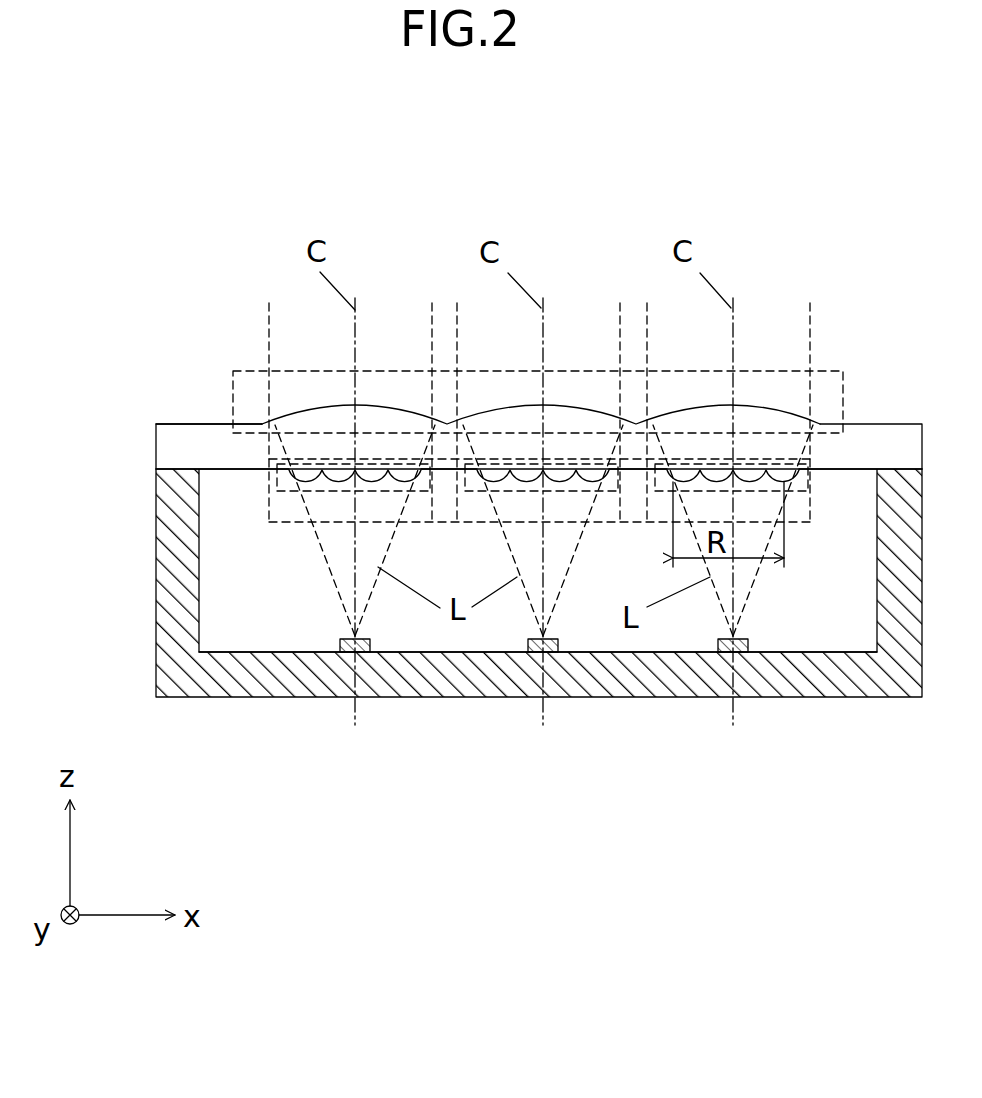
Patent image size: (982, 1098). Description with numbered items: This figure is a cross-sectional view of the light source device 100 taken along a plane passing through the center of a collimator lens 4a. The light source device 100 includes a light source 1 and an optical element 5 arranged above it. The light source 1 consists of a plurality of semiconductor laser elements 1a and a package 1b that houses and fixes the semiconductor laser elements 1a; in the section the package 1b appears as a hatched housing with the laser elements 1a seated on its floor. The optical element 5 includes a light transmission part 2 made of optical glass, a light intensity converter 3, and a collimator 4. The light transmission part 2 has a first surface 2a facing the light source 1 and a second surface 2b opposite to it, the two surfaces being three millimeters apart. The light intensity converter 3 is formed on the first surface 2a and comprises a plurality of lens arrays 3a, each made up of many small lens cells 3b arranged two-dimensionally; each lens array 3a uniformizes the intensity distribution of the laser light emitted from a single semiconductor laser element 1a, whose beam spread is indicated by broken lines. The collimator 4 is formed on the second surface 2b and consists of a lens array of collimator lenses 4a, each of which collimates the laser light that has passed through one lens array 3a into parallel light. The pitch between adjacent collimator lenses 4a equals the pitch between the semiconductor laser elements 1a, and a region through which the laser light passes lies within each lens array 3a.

The light source device 100 is at (207, 303).
The optical element 5 is at (55, 327).
The collimator 4 is at (233, 378).
The collimator lens 4a is at (370, 405).
The light transmission part 2 is at (177, 450).
The second surface 2b is at (200, 424).
The first surface 2a is at (247, 470).
The light intensity converter 3 is at (267, 495).
The lens array 3a is at (278, 490).
The lens cell 3b is at (369, 482).
The light source 1 is at (497, 837).
The semiconductor laser element 1a is at (720, 650).
The package 1b is at (278, 697).